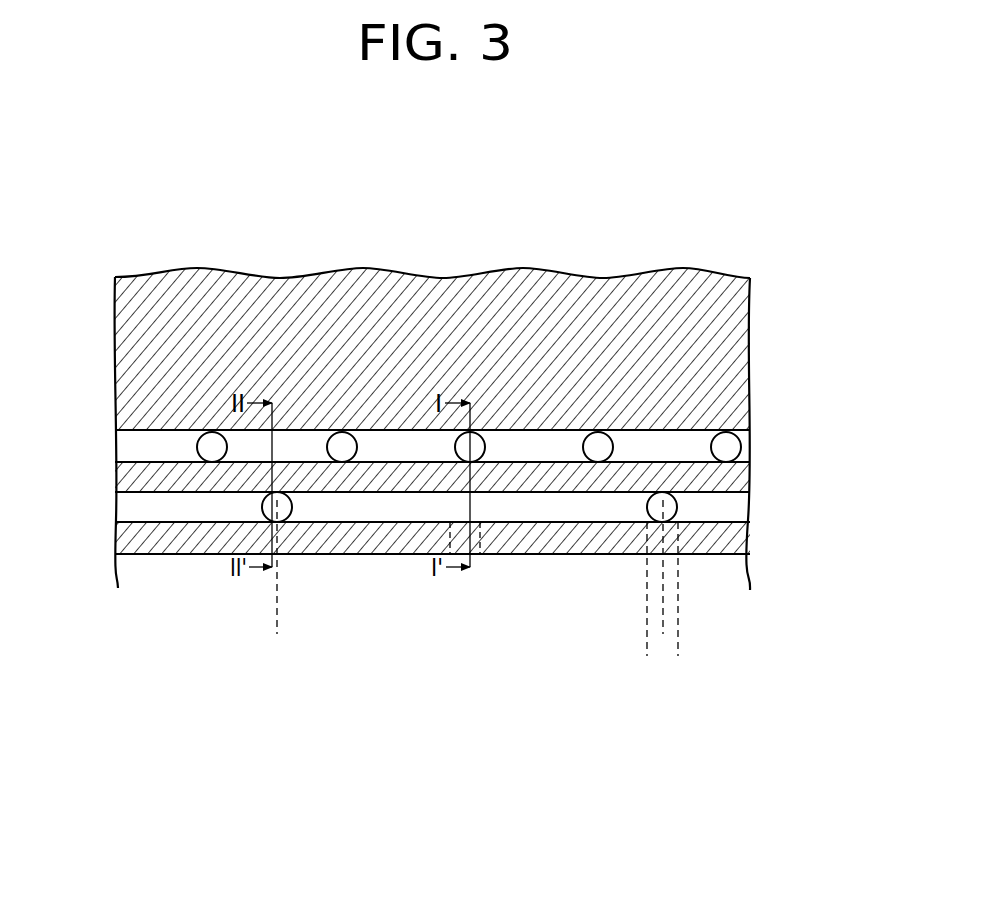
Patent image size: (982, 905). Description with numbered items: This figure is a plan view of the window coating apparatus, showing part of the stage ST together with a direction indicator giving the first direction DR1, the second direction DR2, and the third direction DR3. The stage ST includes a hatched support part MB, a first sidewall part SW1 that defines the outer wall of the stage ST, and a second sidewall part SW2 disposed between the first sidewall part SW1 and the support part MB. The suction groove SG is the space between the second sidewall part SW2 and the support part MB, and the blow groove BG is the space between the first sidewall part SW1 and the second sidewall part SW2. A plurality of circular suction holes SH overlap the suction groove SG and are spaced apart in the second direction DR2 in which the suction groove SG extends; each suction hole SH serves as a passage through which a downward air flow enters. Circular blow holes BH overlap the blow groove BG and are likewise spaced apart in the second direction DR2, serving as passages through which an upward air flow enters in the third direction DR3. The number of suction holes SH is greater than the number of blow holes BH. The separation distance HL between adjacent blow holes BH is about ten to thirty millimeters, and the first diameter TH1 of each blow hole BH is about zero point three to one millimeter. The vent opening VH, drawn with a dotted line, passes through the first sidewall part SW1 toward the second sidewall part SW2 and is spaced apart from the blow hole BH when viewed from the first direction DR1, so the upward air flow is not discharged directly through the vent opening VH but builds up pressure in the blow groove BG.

The support part MB is at (740, 354).
The suction hole SH is at (212, 436).
The suction groove SG is at (122, 452).
The second sidewall part SW2 is at (737, 477).
The blow groove BG is at (123, 513).
The blow hole BH is at (665, 496).
The first sidewall part SW1 is at (737, 538).
The stage ST is at (838, 340).
The vent opening VH is at (478, 546).
The separation distance HL is at (663, 627).
The first diameter TH1 is at (678, 648).
The first direction DR1 is at (67, 787).
The second direction DR2 is at (79, 775).
The third direction DR3 is at (67, 760).